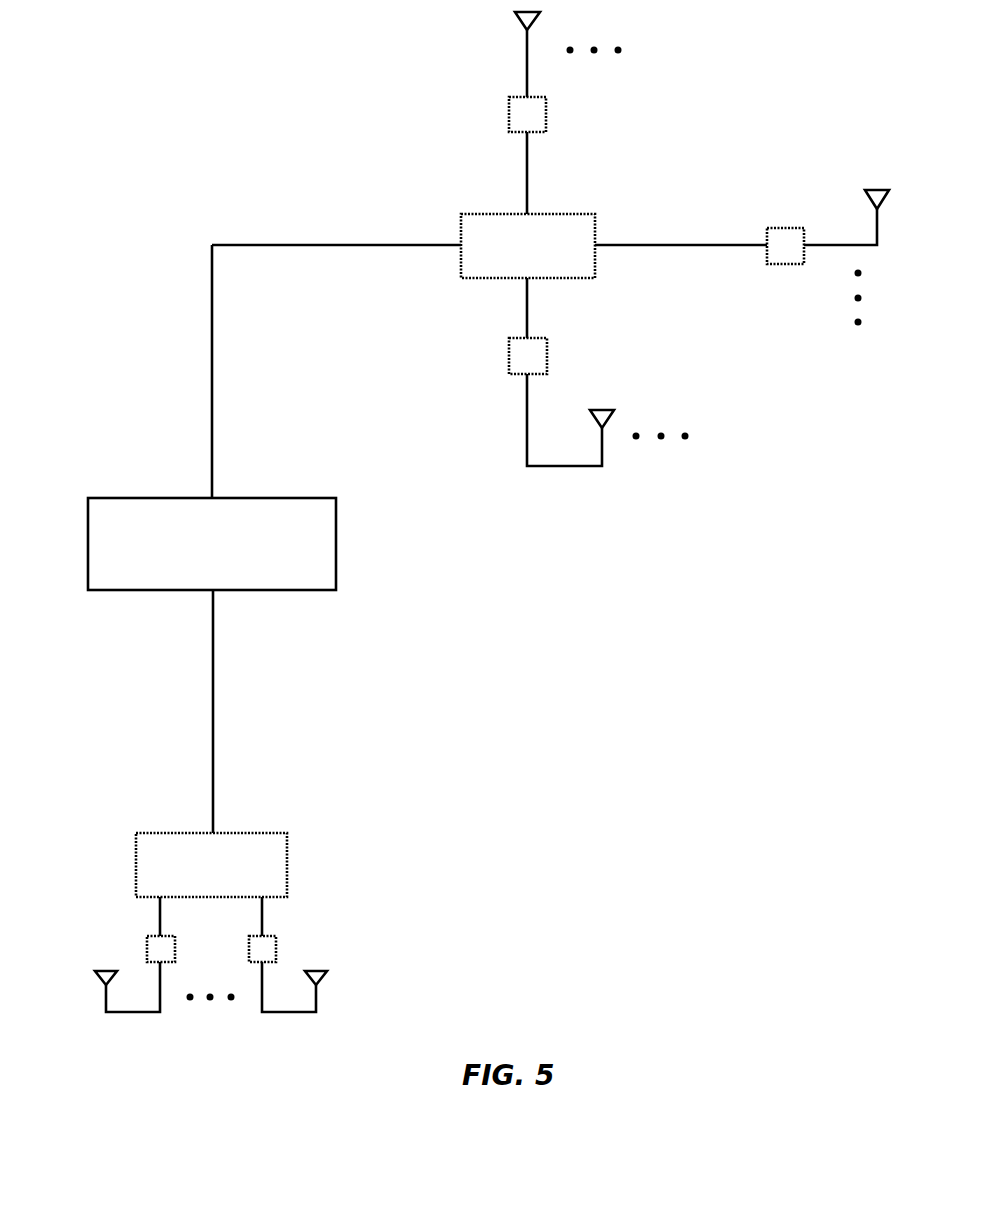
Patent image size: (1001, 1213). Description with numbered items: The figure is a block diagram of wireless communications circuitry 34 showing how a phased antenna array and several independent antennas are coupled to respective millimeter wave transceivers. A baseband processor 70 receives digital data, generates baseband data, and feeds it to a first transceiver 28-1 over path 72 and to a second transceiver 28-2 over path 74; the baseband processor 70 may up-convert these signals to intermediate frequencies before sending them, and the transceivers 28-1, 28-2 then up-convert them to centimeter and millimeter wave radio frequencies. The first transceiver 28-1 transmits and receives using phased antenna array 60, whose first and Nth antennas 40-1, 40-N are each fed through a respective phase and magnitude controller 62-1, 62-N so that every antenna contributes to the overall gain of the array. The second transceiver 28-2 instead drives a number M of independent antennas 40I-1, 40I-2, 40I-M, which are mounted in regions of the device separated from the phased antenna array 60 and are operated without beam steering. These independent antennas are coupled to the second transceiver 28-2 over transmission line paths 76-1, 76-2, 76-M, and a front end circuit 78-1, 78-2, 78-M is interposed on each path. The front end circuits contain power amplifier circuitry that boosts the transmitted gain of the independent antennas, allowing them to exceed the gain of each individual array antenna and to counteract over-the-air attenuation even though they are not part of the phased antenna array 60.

The wireless communications circuitry 34 is at (150, 108).
The baseband processor 70 is at (337, 540).
The path 72 is at (215, 698).
The path 74 is at (214, 373).
The first transceiver 28-1 is at (288, 860).
The second transceiver 28-2 is at (480, 279).
The transmission line path 76-1 is at (527, 165).
The transmission line path 76-2 is at (690, 245).
The transmission line path 76-M is at (528, 306).
The first front end circuit 78-1 is at (509, 115).
The second front end circuit 78-2 is at (787, 228).
The Mth front end circuit 78-M is at (509, 357).
The first independent antenna 40I-1 is at (498, 22).
The second independent antenna 40I-2 is at (870, 178).
The Mth independent antenna 40I-M is at (620, 395).
The first antenna 40-1 is at (97, 977).
The Nth antenna 40-N is at (314, 968).
The first phase and magnitude controller 62-1 is at (175, 946).
The Nth phase and magnitude controller 62-N is at (249, 958).
The phased antenna array 60 is at (202, 957).